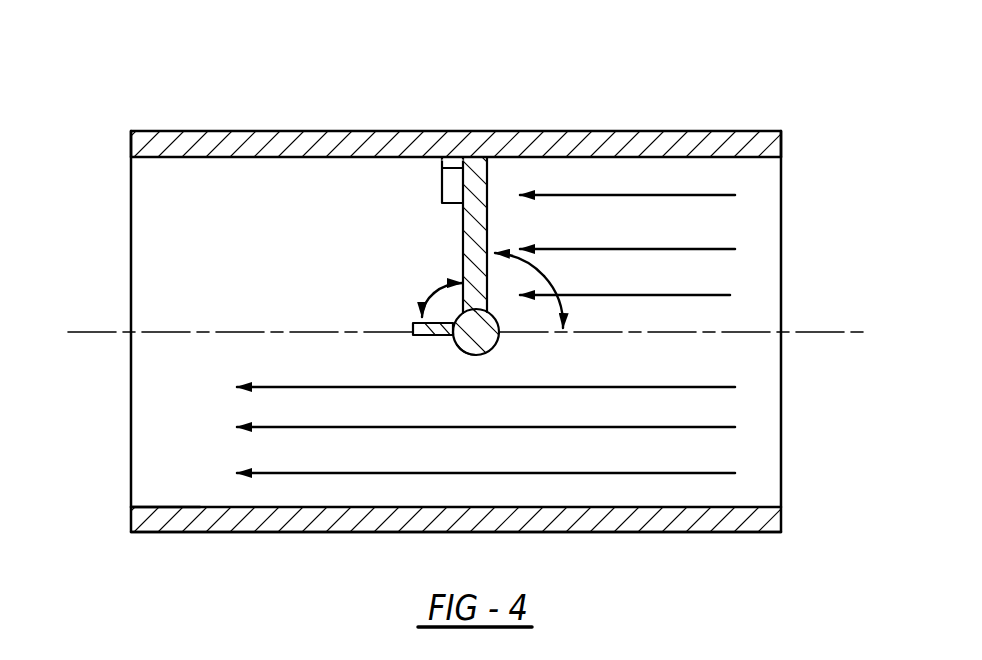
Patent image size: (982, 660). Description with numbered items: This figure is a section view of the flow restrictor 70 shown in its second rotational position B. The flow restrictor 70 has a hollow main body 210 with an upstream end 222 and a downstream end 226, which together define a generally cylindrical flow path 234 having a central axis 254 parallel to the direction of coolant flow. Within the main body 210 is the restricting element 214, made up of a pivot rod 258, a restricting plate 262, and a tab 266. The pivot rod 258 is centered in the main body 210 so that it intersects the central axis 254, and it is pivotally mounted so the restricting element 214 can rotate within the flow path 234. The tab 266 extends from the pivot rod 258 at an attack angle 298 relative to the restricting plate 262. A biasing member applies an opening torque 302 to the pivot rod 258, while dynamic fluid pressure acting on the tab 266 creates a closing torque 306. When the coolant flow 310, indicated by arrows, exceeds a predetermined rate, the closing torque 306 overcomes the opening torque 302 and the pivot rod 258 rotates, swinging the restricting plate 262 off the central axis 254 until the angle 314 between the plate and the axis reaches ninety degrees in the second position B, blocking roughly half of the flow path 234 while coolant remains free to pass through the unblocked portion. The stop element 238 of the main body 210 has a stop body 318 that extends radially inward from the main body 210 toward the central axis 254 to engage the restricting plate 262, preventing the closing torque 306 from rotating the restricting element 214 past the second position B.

The flow restrictor 70 is at (207, 572).
The main body 210 is at (285, 131).
The restricting element 214 is at (460, 360).
The upstream end 222 is at (781, 143).
The downstream end 226 is at (131, 142).
The flow path 234 is at (183, 507).
The stop element 238 is at (443, 183).
The central axis 254 is at (88, 332).
The pivot rod 258 is at (458, 345).
The restricting plate 262 is at (488, 180).
The tab 266 is at (413, 335).
The attack angle 298 is at (437, 293).
The opening torque 302 is at (475, 382).
The closing torque 306 is at (507, 297).
The flow of coolant fluid 310 is at (343, 475).
The angle 314 is at (550, 277).
The stop body 318 is at (441, 162).
The second rotational position B is at (488, 200).